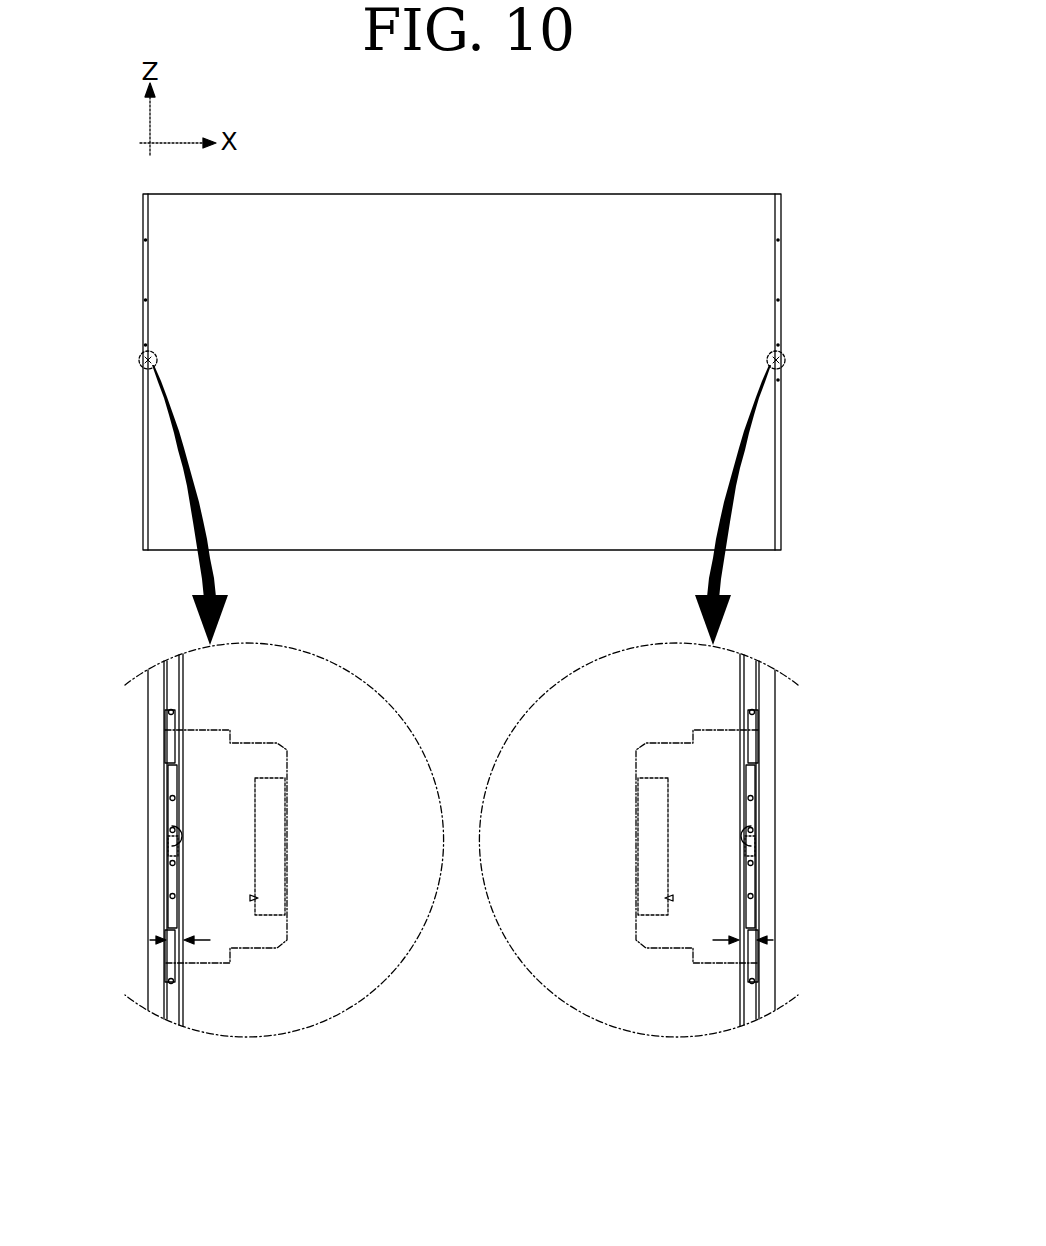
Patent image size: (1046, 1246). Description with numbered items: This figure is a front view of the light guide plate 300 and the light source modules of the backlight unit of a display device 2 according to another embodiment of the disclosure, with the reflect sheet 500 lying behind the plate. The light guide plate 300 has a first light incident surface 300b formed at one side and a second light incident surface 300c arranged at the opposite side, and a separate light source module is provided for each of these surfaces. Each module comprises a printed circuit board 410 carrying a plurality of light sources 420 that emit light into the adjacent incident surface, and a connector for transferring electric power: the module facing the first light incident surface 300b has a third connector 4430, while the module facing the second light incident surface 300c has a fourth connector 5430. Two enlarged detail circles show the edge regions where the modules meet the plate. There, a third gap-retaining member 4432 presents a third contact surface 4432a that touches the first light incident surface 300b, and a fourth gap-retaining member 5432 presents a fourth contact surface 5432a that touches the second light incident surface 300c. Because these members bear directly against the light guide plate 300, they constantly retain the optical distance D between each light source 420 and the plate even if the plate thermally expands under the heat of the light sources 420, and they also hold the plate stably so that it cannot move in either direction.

The display device 2 is at (445, 113).
The light guide plate 300 is at (636, 188).
The first light incident surface 300b is at (189, 676).
The second light incident surface 300c is at (734, 676).
The printed circuit board 410 is at (158, 668).
The light source 420 is at (166, 738).
The reflect sheet 500 is at (181, 652).
The third gap-retaining member 4432 is at (170, 846).
The third contact surface 4432a is at (174, 829).
The fourth gap-retaining member 5432 is at (753, 846).
The fourth contact surface 5432a is at (749, 829).
The third connector 4430 is at (248, 972).
The fourth connector 5430 is at (675, 972).
The optical distance D is at (166, 921).